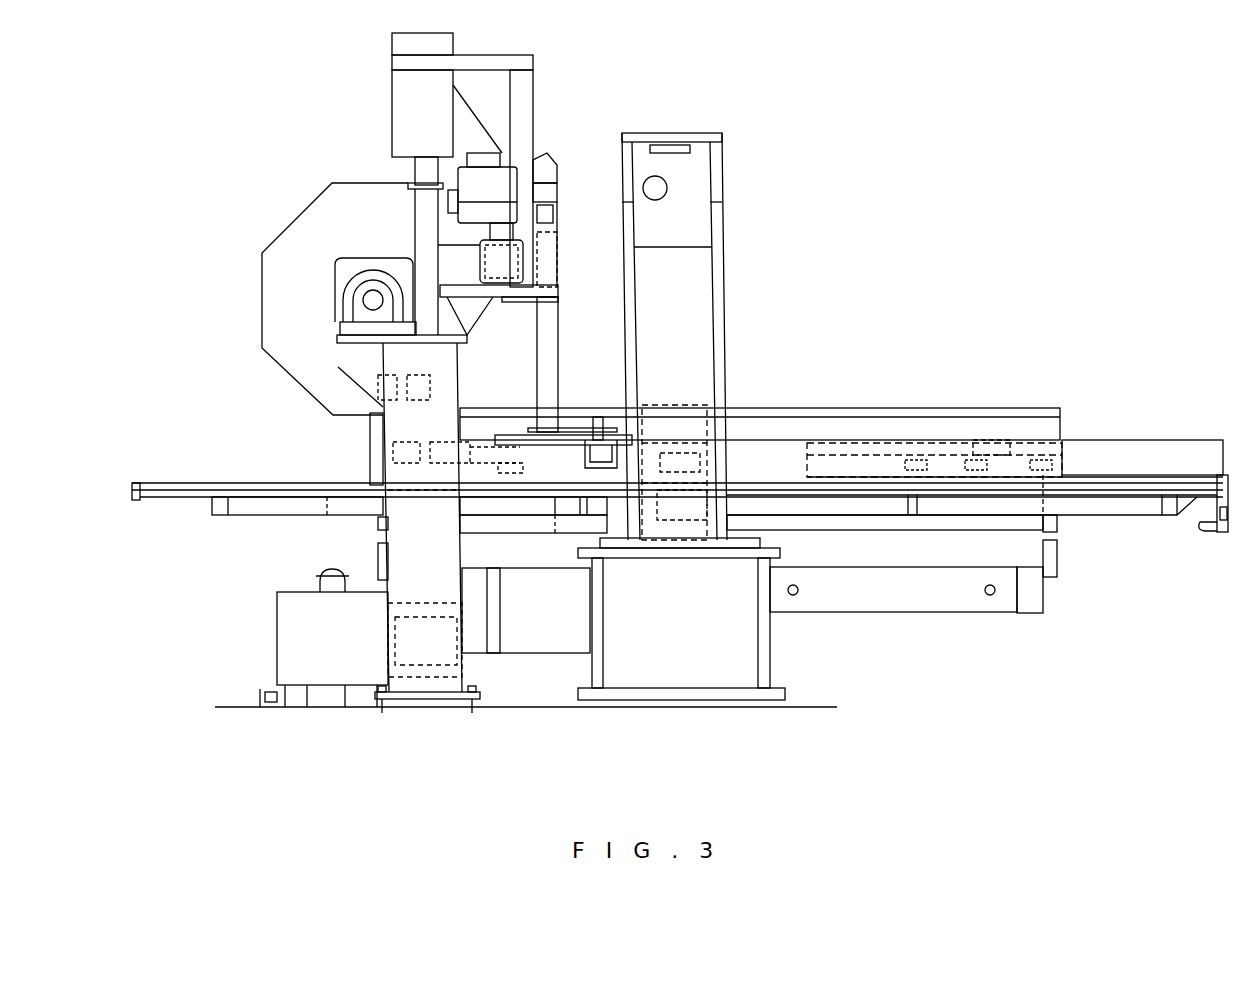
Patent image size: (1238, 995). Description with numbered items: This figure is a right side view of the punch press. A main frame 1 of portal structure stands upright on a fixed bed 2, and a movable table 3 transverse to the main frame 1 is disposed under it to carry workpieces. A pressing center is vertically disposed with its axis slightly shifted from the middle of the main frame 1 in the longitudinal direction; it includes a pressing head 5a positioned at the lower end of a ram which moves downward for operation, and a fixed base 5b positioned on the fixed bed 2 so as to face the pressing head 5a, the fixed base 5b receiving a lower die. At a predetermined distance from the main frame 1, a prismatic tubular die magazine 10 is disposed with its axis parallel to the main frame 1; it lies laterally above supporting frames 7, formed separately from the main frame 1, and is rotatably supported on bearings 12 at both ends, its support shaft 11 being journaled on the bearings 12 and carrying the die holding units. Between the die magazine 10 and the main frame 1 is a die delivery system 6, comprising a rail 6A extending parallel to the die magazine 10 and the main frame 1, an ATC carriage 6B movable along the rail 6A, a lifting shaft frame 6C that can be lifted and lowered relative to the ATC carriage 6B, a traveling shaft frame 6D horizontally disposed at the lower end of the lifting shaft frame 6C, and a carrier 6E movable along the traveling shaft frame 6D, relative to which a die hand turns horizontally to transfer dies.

The main frame 1 is at (722, 232).
The fixed bed 2 is at (630, 640).
The movable table 3 is at (920, 440).
The pressing head 5a is at (705, 420).
The fixed base 5b is at (715, 560).
The die delivery system 6 is at (575, 143).
The rail 6A is at (480, 247).
The ATC carriage 6B is at (490, 180).
The lifting shaft frame 6C is at (537, 352).
The traveling shaft frame 6D is at (565, 435).
The carrier 6E is at (598, 417).
The supporting frames 7 is at (402, 525).
The die magazine 10 is at (292, 360).
The support shaft 11 is at (340, 298).
The bearings 12 is at (363, 287).